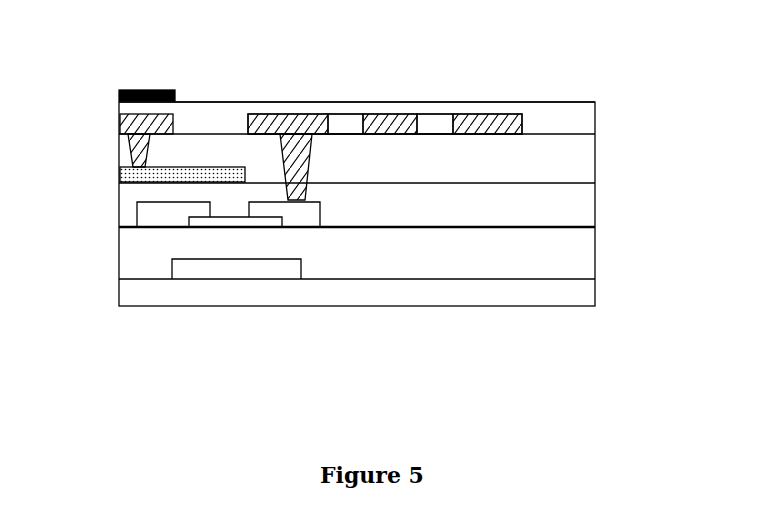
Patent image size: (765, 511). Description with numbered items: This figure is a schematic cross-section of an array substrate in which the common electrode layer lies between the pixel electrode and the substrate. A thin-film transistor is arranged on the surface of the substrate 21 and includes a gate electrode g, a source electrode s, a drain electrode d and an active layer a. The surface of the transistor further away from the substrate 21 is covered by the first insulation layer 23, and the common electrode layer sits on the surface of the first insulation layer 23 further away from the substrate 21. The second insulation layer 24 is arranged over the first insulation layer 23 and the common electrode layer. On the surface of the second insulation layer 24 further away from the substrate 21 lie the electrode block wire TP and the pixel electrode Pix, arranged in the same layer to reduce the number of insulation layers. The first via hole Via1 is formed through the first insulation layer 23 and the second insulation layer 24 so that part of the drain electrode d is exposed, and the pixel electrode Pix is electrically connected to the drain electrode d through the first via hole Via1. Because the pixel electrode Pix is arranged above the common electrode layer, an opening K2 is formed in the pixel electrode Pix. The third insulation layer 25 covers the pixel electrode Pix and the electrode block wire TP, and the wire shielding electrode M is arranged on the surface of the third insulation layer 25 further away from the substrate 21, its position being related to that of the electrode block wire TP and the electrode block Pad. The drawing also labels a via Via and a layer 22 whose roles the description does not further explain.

The substrate 21 is at (433, 295).
The buffer layer 22 is at (570, 253).
The first insulation layer 23 is at (570, 212).
The second insulation layer 24 is at (580, 167).
The third insulation layer 25 is at (582, 113).
The wire shielding electrode M is at (129, 90).
The electrode block wire TP is at (119, 121).
The via hole Via is at (130, 148).
The first via hole Via1 is at (308, 153).
The electrode block Pad is at (230, 167).
The pixel electrode Pix is at (485, 120).
The opening K2 is at (345, 128).
The source electrode s is at (158, 215).
The active layer a is at (243, 225).
The gate electrode g is at (285, 268).
The drain electrode d is at (312, 219).